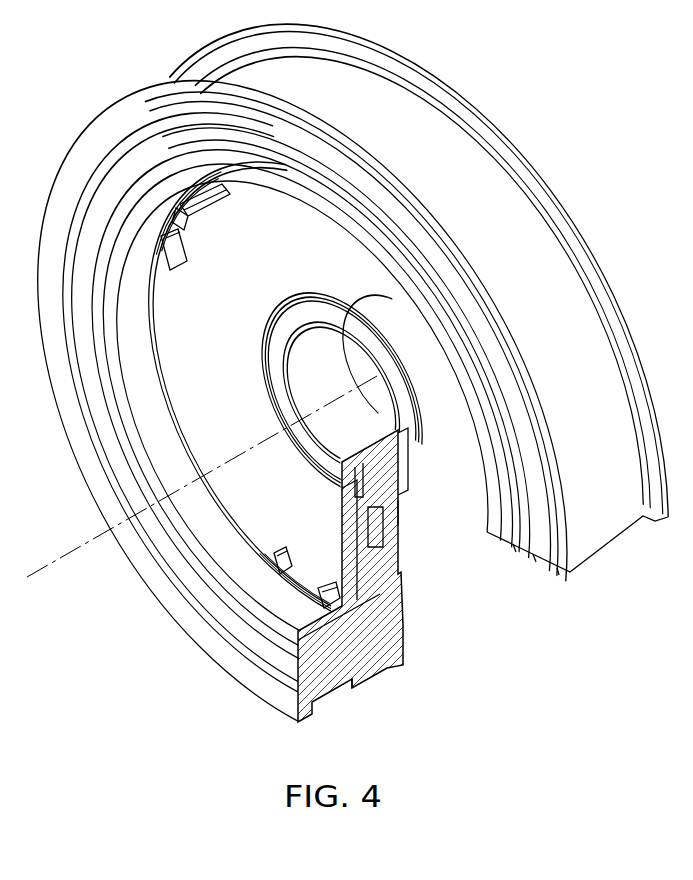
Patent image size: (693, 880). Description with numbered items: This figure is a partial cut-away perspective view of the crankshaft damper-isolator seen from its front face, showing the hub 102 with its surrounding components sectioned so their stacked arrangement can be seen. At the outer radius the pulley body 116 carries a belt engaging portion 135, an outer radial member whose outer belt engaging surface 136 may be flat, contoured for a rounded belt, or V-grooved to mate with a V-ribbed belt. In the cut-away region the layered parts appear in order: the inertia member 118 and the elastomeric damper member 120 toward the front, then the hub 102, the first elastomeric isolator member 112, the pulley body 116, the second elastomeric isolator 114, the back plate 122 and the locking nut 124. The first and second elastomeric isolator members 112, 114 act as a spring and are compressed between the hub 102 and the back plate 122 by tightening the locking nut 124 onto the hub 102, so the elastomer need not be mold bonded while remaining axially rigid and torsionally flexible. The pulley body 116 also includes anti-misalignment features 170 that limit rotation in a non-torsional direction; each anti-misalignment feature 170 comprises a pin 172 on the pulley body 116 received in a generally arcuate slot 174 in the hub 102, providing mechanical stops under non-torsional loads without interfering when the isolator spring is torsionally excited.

The hub 102 is at (223, 350).
The first elastomeric isolator member 112 is at (361, 552).
The second elastomeric isolator 114 is at (384, 531).
The pulley body 116 is at (370, 487).
The inertia member 118 is at (314, 684).
The elastomeric damper member 120 is at (347, 640).
The back plate 122 is at (399, 513).
The locking nut 124 is at (404, 461).
The belt engaging portion 135 is at (551, 560).
The outer belt engaging surface 136 is at (563, 297).
The anti-misalignment feature 170 is at (212, 246).
The pin 172 is at (206, 197).
The slot 174 is at (182, 246).